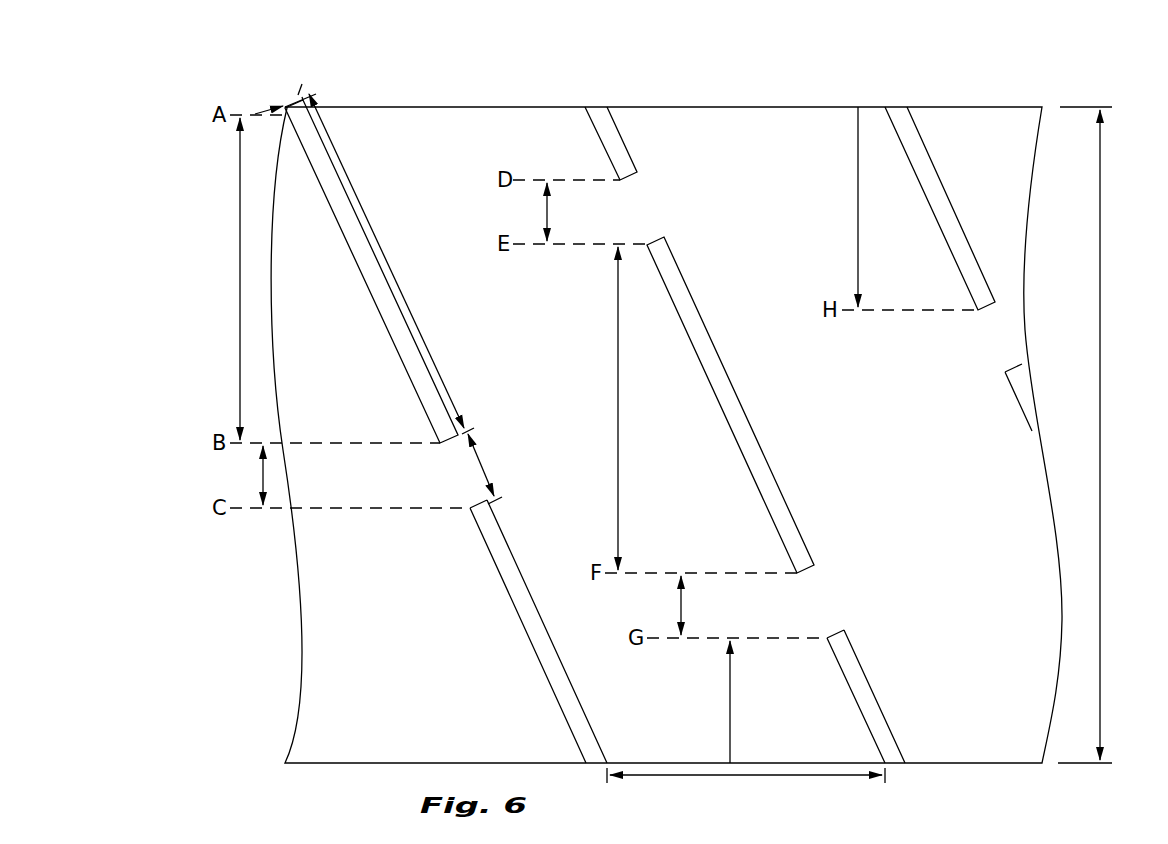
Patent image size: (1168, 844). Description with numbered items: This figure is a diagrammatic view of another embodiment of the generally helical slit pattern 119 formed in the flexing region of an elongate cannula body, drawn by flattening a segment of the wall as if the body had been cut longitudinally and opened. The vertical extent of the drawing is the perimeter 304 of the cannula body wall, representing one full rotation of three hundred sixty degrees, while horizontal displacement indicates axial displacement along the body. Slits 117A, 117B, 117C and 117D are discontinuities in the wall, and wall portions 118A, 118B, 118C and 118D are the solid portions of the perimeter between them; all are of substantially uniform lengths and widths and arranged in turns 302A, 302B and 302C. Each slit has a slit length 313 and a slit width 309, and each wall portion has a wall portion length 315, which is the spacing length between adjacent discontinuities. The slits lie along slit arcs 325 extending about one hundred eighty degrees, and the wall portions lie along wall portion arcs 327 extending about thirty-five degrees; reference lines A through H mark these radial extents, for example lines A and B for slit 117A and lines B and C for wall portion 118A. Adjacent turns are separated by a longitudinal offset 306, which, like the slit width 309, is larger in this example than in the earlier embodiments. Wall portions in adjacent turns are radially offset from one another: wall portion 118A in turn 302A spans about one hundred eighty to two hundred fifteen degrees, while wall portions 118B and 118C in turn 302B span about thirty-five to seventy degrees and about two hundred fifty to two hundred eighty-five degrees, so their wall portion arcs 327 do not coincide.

The generally helical slit pattern 119 is at (680, 90).
The slit 117A is at (385, 290).
The slit 117B is at (522, 598).
The slit 117C is at (728, 390).
The slit 117D is at (857, 677).
The wall portion 118A is at (452, 481).
The wall portion 118B is at (647, 212).
The wall portion 118C is at (823, 600).
The wall portion 118D is at (1000, 352).
The turn 302A is at (290, 92).
The turn 302B is at (590, 92).
The turn 302C is at (890, 94).
The perimeter 304 is at (1100, 385).
The longitudinal offset 306 is at (737, 778).
The slit width 309 is at (310, 88).
The slit length 313 is at (432, 350).
The wall portion length 315 is at (483, 462).
The slit arc 325 is at (240, 270).
The wall portion arc 327 is at (263, 478).